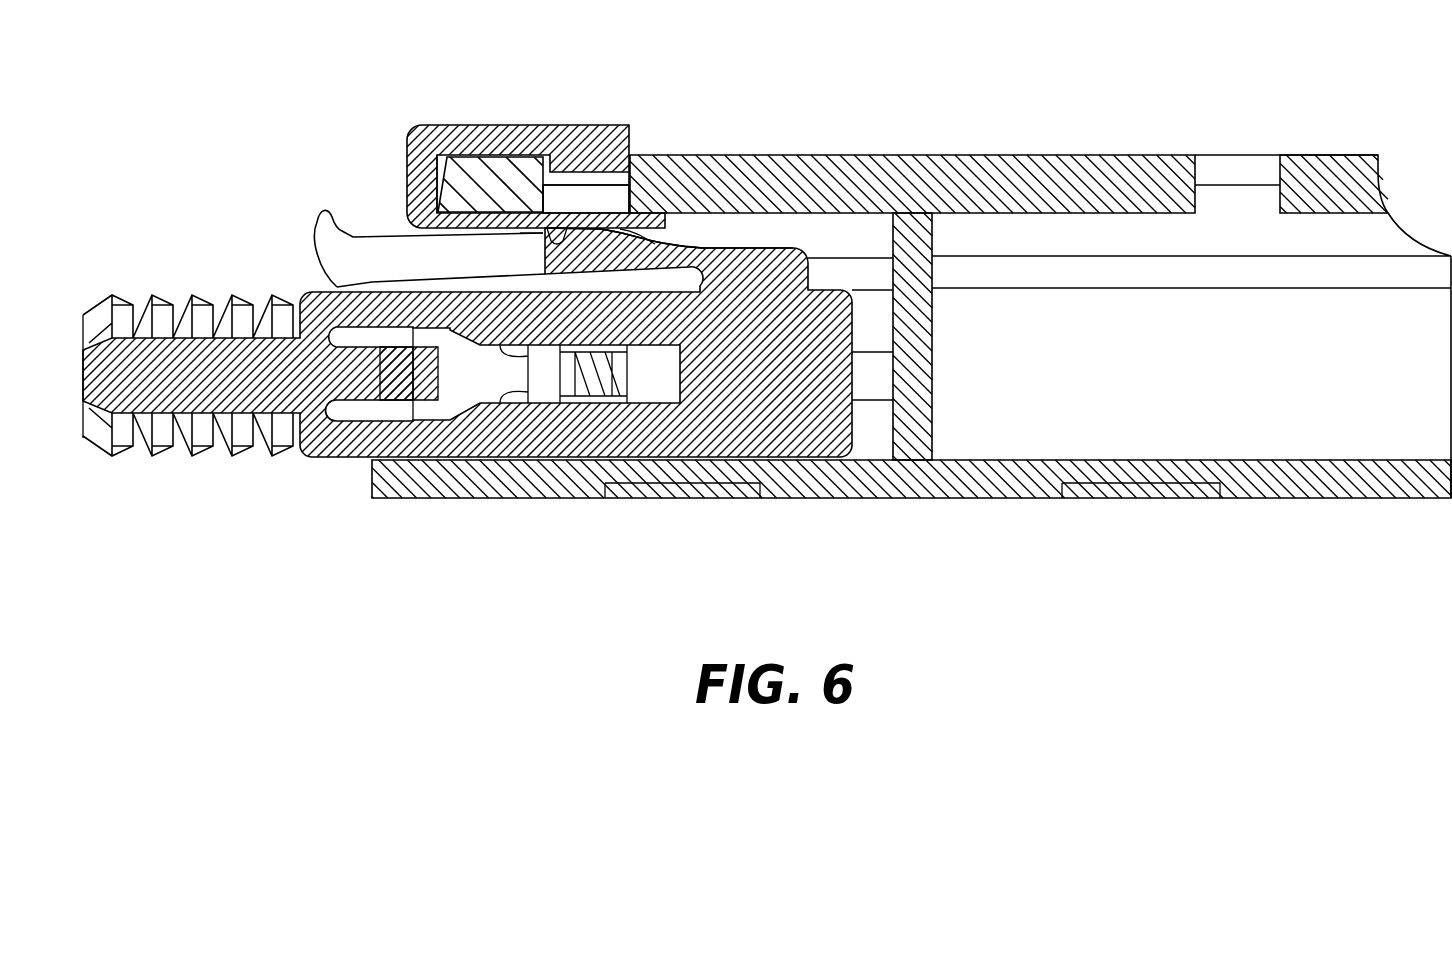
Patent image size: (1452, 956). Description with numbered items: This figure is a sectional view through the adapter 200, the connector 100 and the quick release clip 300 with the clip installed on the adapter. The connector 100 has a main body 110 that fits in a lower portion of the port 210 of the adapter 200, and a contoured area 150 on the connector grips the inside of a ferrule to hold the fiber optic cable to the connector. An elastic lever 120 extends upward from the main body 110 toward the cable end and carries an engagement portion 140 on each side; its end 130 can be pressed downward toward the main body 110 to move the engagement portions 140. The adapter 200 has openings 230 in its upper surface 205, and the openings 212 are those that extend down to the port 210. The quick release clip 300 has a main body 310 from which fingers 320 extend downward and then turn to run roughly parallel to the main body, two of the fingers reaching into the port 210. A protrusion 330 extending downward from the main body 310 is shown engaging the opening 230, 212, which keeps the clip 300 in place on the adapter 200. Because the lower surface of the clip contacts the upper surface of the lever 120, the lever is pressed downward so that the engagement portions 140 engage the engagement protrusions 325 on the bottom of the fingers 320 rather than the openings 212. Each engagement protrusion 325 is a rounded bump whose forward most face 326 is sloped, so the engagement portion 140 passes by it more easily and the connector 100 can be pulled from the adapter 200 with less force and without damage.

The connector 100 is at (173, 383).
The main body 110 is at (385, 433).
The lever 120 is at (643, 253).
The end 130 is at (332, 233).
The engagement portion 140 is at (578, 237).
The contoured area 150 is at (137, 313).
The adapter 200 is at (1110, 175).
The upper surface 205 is at (692, 155).
The port 210 is at (862, 230).
The opening 212 is at (586, 199).
The opening 230 is at (568, 195).
The quick release clip 300 is at (478, 128).
The main body 310 is at (515, 130).
The finger 320 is at (632, 222).
The engagement protrusion 325 is at (528, 232).
The forward most face 326 is at (551, 232).
The protrusion 330 is at (566, 165).